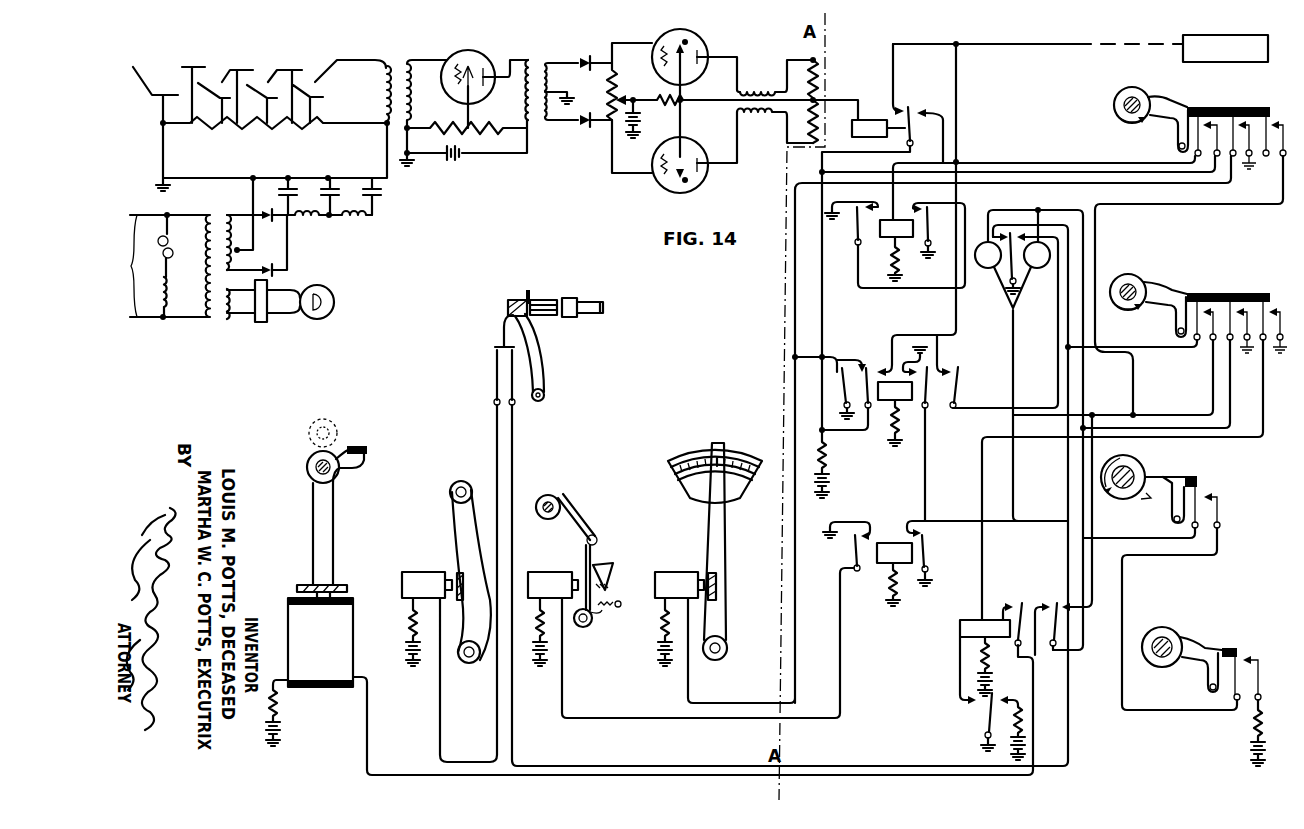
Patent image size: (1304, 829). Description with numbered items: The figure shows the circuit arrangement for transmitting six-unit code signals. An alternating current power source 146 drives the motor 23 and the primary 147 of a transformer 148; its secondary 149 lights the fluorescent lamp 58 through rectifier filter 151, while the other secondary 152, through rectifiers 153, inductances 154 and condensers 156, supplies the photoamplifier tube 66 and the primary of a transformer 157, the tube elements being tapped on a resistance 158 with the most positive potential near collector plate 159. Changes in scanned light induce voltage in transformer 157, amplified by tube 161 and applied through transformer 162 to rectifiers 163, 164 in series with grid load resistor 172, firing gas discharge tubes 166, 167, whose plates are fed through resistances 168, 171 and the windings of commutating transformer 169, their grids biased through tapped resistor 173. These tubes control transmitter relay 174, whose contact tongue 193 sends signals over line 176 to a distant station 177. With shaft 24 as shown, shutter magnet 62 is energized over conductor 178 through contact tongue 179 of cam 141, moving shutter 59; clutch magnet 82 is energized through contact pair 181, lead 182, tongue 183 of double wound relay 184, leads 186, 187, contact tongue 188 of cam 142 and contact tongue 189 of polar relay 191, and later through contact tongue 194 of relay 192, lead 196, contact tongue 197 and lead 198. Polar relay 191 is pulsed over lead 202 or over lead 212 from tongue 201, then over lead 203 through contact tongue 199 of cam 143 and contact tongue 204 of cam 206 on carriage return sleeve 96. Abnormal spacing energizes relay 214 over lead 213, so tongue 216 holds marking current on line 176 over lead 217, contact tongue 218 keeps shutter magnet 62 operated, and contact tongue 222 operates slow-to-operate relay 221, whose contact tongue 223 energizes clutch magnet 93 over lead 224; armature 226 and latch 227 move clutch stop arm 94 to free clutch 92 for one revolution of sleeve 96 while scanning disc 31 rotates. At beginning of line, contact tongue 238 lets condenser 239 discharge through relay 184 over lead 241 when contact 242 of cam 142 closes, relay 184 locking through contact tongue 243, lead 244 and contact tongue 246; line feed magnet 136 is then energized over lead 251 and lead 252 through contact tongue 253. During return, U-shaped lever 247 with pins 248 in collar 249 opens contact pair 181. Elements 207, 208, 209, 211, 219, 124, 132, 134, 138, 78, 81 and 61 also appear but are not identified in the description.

The photoamplifier tube 66 is at (201, 67).
The collector plate 159 is at (320, 76).
The transformer 157 is at (398, 63).
The resistance 158 is at (272, 128).
The condensers 156 is at (368, 188).
The inductances 154 is at (322, 220).
The rectifiers 153 is at (300, 235).
The secondary 152 is at (243, 251).
The transformer 148 is at (238, 203).
The secondary 149 is at (232, 318).
The rectifier filter 151 is at (268, 318).
The fluorescent lamp 58 is at (332, 292).
The motor 23 is at (172, 236).
The alternating current power source 146 is at (132, 266).
The primary 147 is at (208, 300).
The tube 161 is at (465, 58).
The transformer 162 is at (532, 62).
The rectifier 163 is at (588, 59).
The rectifier 164 is at (585, 125).
The grid load resistor 172 is at (616, 68).
The tube 166 is at (696, 38).
The tube 167 is at (700, 182).
The commutating transformer 169 is at (768, 88).
The tapped resistor 173 is at (728, 125).
The resistance 168 is at (816, 85).
The resistance 171 is at (818, 118).
The transmitter relay 174 is at (880, 120).
The contact tongue 193 is at (915, 128).
The line 176 is at (1075, 42).
The distant station 177 is at (1183, 36).
The lead 202 is at (958, 168).
The lead 217 is at (958, 315).
The conductor 207 is at (1006, 162).
The conductor 209 is at (1068, 170).
The conductor 178 is at (797, 296).
The lead 198 is at (1115, 212).
The cam 141 is at (1113, 103).
The shaft 24 is at (1133, 100).
The contact block 208 is at (1205, 106).
The contact tongue 179 is at (1233, 105).
The contact tongue 197 is at (1272, 96).
The lead 212 is at (1036, 208).
The contact tongue 189 is at (1018, 290).
The polar relay 191 is at (984, 279).
The lead 203 is at (1016, 366).
The relay 192 is at (887, 218).
The contact tongue 194 is at (855, 230).
The tongue 201 is at (940, 202).
The conductor 211 is at (822, 255).
The lead 196 is at (885, 290).
The contact tongue 218 is at (838, 355).
The tongue 216 is at (885, 352).
The contact tongue 222 is at (935, 362).
The relay 214 is at (903, 402).
The relay armature 219 is at (965, 378).
The lead 187 is at (1112, 412).
The lead 213 is at (962, 407).
The cam 142 is at (1134, 272).
The contact tongue 188 is at (1207, 292).
The contact tongue 246 is at (1244, 292).
The contact 242 is at (1268, 292).
The lead 241 is at (984, 490).
The lead 252 is at (956, 520).
The slow-to-operate relay 221 is at (880, 543).
The contact tongue 223 is at (845, 558).
The contact tongue 253 is at (928, 543).
The lead 224 is at (845, 665).
The lead 182 is at (615, 764).
The lead 251 is at (418, 770).
The contact tongue 243 is at (1022, 598).
The tongue 183 is at (1056, 600).
The lead 186 is at (1095, 574).
The lead 244 is at (1086, 604).
The double wound relay 184 is at (963, 618).
The contact tongue 238 is at (995, 695).
The condenser 239 is at (980, 731).
The cam 143 is at (1143, 462).
The contact tongue 199 is at (1200, 490).
The cam 206 is at (1205, 615).
The contact tongue 204 is at (1249, 658).
The roller 124 is at (307, 462).
The roller 132 is at (333, 422).
The arm 138 is at (366, 447).
The plunger head 134 is at (340, 585).
The line feed magnet 136 is at (297, 600).
The clutch magnet 82 is at (440, 570).
The armature 81 is at (460, 572).
The lever 78 is at (485, 495).
The clutch magnet 93 is at (565, 570).
The carriage return sleeve 96 is at (552, 495).
The clutch 92 is at (564, 491).
The clutch stop arm 94 is at (580, 520).
The armature 226 is at (588, 626).
The latch 227 is at (612, 568).
The shutter magnet 62 is at (678, 570).
The armature 61 is at (722, 580).
The shutter 59 is at (727, 525).
The scanning disc 31 is at (735, 450).
The contact pair 181 is at (495, 348).
The U-shaped lever 247 is at (540, 350).
The pins 248 is at (508, 300).
The collar 249 is at (528, 290).